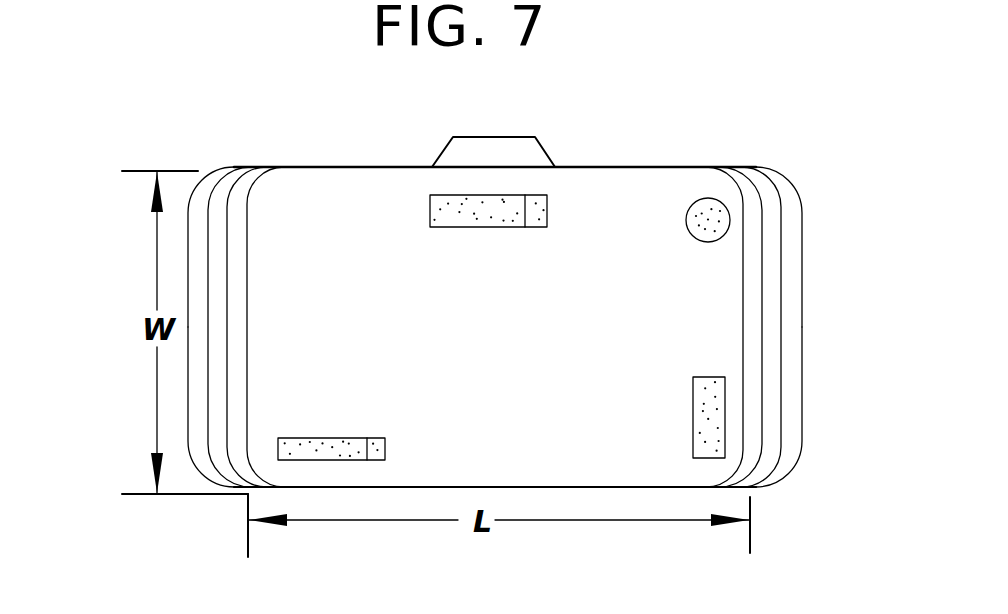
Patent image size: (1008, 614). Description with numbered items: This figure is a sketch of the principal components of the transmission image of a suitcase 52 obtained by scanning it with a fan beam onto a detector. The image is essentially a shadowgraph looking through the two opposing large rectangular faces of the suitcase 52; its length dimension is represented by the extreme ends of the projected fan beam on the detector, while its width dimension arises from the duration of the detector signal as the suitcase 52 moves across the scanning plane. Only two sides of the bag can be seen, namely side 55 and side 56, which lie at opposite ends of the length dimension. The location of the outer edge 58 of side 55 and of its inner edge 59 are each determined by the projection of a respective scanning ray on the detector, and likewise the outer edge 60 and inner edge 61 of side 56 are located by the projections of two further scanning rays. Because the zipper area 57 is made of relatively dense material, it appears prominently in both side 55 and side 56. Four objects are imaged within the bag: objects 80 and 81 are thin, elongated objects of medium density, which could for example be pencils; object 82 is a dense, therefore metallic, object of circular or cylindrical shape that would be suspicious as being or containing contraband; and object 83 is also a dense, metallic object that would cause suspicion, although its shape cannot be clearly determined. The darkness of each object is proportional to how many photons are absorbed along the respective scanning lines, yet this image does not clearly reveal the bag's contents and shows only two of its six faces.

The suitcase 52 is at (828, 301).
The side 55 is at (797, 199).
The side 56 is at (195, 230).
The zipper area 57 is at (210, 358).
The outer edge 58 is at (802, 392).
The inner edge 59 is at (750, 432).
The outer edge 60 is at (188, 421).
The inner edge 61 is at (247, 268).
The object 80 is at (318, 438).
The object 81 is at (478, 227).
The object 82 is at (686, 217).
The object 83 is at (693, 414).